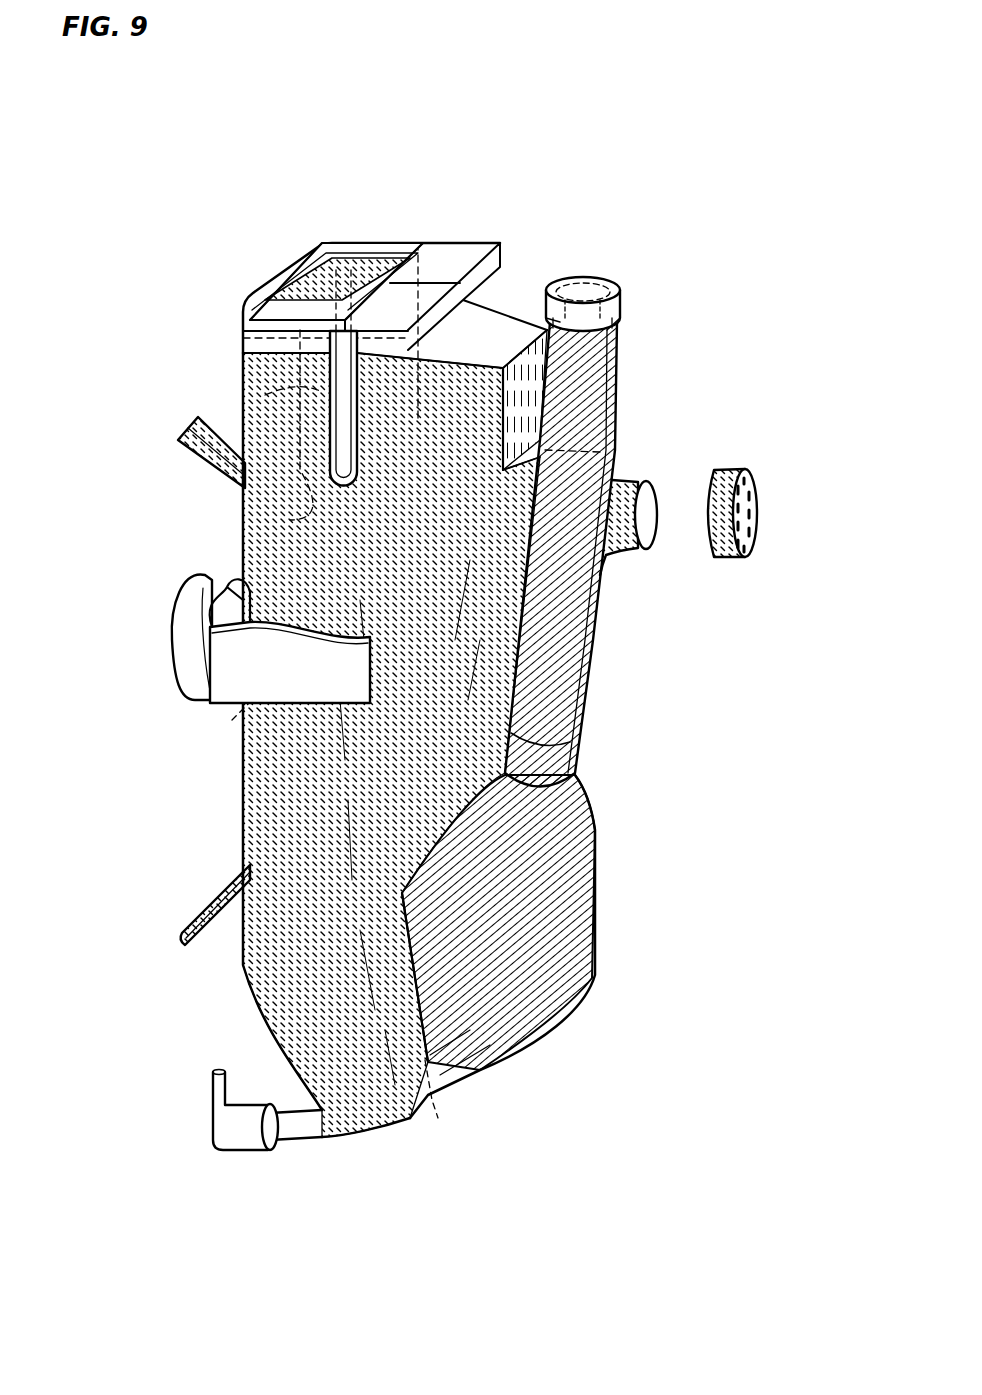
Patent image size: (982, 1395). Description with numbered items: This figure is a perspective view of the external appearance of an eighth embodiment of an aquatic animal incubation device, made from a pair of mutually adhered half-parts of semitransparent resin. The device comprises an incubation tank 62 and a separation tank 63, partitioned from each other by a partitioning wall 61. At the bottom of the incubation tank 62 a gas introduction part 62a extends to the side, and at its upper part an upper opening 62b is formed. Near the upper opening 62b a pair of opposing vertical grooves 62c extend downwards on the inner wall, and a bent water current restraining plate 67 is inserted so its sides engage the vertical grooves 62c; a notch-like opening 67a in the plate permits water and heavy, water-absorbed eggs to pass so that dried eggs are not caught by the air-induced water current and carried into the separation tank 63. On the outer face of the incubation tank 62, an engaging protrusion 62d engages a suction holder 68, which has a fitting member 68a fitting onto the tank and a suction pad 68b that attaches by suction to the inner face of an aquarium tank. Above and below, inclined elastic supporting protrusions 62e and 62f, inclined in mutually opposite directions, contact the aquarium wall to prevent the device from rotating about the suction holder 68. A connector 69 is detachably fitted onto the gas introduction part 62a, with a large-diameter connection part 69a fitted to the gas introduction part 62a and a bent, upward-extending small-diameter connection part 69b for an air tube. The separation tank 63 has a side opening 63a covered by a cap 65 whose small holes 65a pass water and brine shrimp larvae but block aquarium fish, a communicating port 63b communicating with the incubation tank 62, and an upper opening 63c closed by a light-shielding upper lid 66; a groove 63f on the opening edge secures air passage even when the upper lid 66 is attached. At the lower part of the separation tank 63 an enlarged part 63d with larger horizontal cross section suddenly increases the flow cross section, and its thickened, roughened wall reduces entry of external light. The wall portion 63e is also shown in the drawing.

The partitioning wall 61 is at (600, 452).
The incubation tank 62 is at (293, 792).
The gas introduction part 62a is at (322, 1150).
The upper opening 62b is at (336, 268).
The vertical grooves 62c is at (265, 395).
The engaging protrusion 62d is at (232, 740).
The supporting protrusion 62e is at (178, 440).
The supporting protrusion 62f is at (182, 933).
The separation tank 63 is at (625, 554).
The side opening 63a is at (655, 548).
The communicating port 63b is at (438, 1118).
The upper opening 63c is at (610, 288).
The enlarged part 63d is at (560, 902).
The pipe wall 63e is at (612, 410).
The groove 63f is at (605, 330).
The cap 65 is at (782, 485).
The small holes 65a is at (758, 528).
The upper lid 66 is at (639, 239).
The water current restraining plate 67 is at (300, 330).
The opening 67a is at (240, 470).
The suction holder 68 is at (204, 654).
The fitting member 68a is at (212, 700).
The suction pad 68b is at (172, 655).
The connector 69 is at (176, 1149).
The large-diameter connection part 69a is at (262, 1150).
The small-diameter connection part 69b is at (213, 1095).